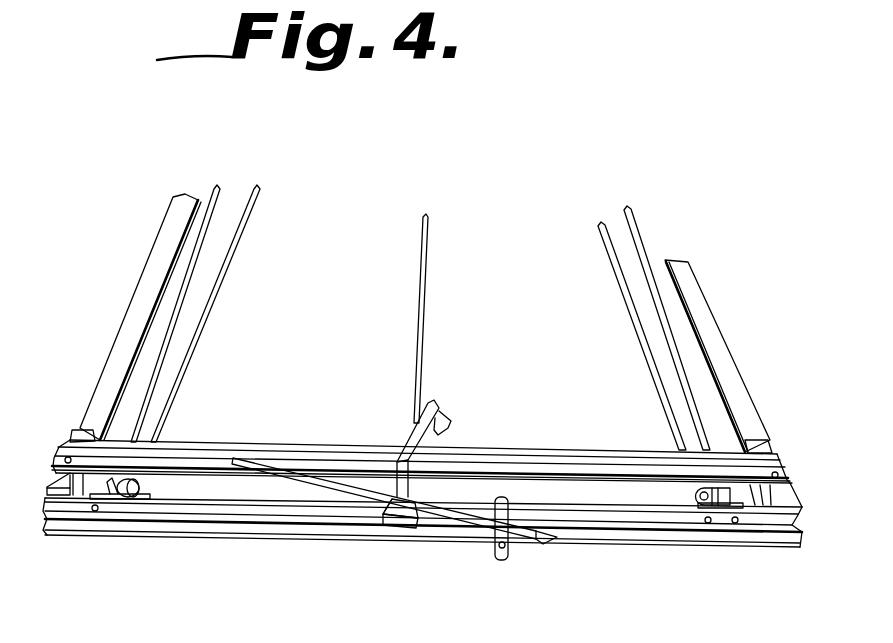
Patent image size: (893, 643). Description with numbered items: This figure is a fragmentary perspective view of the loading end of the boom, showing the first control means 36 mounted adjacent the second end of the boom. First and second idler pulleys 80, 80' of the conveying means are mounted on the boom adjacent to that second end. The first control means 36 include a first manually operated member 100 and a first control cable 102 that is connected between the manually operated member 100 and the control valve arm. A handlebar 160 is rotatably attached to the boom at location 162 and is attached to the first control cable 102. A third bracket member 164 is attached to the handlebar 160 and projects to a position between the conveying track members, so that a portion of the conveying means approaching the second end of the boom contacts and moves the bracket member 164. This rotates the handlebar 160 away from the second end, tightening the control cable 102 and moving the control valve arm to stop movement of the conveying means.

The first control means 36 is at (402, 481).
The first idler pulley 80 is at (131, 526).
The second idler pulley 80' is at (745, 546).
The first manually operated member 100 is at (463, 530).
The first control cable 102 is at (425, 307).
The handlebar 160 is at (540, 543).
The location 162 is at (220, 474).
The third bracket member 164 is at (430, 402).